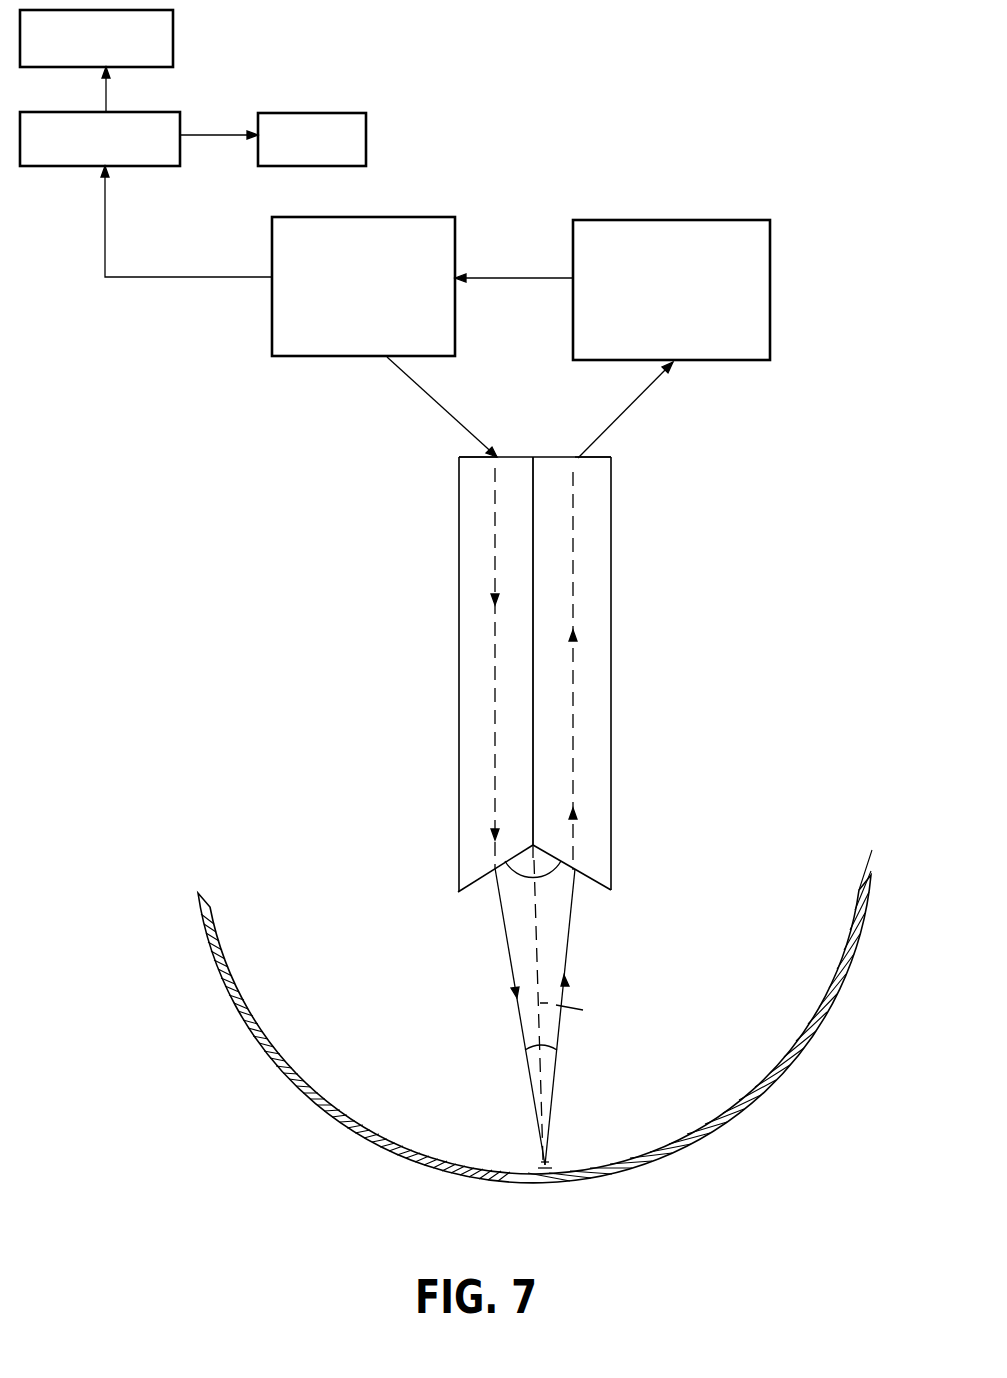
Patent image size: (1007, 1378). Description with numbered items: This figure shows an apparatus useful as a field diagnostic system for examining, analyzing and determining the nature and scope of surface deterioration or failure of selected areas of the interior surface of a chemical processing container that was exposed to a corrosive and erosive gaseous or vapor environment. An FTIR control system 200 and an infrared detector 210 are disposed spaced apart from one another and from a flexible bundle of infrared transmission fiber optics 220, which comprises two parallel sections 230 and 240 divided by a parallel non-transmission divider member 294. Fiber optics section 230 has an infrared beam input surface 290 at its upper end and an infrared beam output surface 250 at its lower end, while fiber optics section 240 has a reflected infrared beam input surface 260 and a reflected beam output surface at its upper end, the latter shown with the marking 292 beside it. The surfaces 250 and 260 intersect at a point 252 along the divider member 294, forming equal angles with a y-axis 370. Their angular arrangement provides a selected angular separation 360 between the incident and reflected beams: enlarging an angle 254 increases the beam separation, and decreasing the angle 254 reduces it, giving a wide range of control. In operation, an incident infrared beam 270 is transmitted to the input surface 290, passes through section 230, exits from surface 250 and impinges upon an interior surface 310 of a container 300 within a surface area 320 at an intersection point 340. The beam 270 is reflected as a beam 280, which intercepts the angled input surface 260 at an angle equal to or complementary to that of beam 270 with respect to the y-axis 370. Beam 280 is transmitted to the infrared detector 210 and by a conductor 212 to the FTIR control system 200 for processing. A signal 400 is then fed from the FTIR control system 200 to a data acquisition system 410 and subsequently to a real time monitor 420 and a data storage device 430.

The FTIR control system 200 is at (272, 327).
The infrared detector 210 is at (771, 288).
The conductor 212 is at (513, 275).
The flexible bundle of infrared transmission fiber optics 220 is at (655, 590).
The fiber optics section 230 is at (462, 705).
The fiber optics section 240 is at (613, 724).
The infrared beam output surface 250 is at (477, 883).
The intersection point 252 is at (545, 857).
The angle 254 is at (517, 880).
The reflected infrared beam input surface 260 is at (598, 890).
The incident infrared beam 270 is at (445, 410).
The reflected infrared beam 280 is at (640, 398).
The infrared beam input surface 290 is at (472, 457).
The second opening 292 is at (590, 457).
The parallel non-transmission divider member 294 is at (536, 598).
The container 300 is at (539, 1016).
The interior surface 310 is at (378, 1128).
The surface area 320 is at (533, 1168).
The intersection point 340 is at (556, 1163).
The angular separation 360 is at (547, 1052).
The y-axis 370 is at (685, 1008).
The signal 400 is at (106, 220).
The data acquisition system 410 is at (180, 128).
The real time monitor 420 is at (177, 45).
The data storage device 430 is at (367, 137).